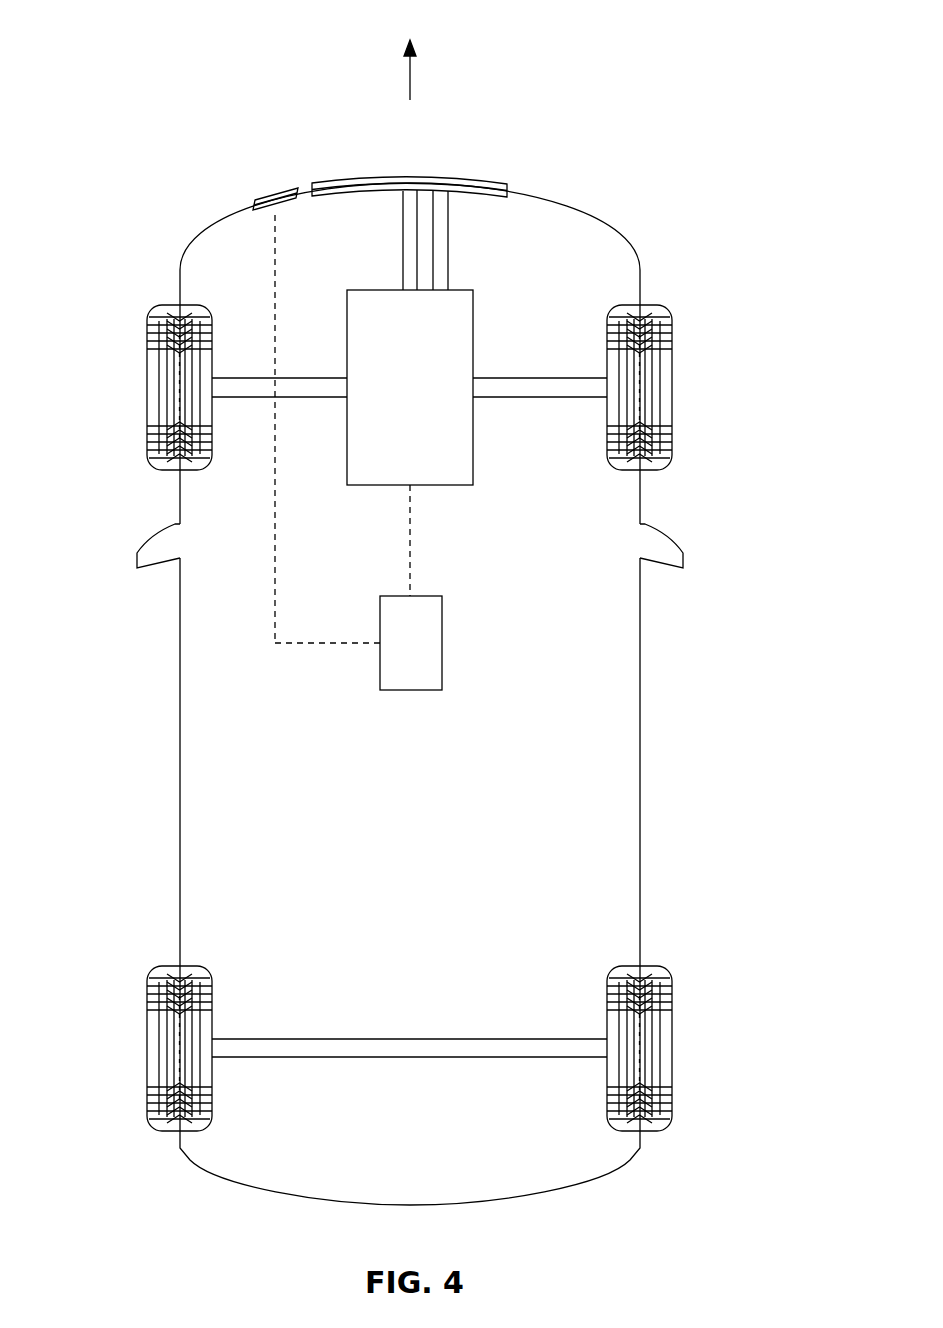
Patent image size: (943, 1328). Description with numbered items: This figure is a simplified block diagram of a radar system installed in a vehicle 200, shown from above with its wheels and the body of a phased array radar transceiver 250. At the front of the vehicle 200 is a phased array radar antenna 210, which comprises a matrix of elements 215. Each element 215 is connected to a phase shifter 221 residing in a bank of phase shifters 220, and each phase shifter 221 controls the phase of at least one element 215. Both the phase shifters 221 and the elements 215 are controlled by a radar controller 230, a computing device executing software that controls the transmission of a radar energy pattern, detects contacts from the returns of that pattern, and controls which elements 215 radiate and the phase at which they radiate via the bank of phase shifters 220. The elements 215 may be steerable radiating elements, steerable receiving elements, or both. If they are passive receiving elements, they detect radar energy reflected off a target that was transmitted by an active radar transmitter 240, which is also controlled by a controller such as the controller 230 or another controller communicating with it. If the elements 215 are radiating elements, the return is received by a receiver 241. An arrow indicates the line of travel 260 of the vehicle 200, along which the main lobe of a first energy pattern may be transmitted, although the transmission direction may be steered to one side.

The vehicle 200 is at (176, 87).
The phased array radar antenna 210 is at (489, 164).
The elements 215 is at (415, 134).
The bank of phase shifters 220 is at (488, 345).
The phase shifter 221 is at (434, 403).
The radar controller 230 is at (456, 665).
The active radar transmitter 240 is at (271, 178).
The receiver 241 is at (293, 190).
The phased array radar transceiver 250 is at (204, 600).
The line of travel 260 is at (406, 72).